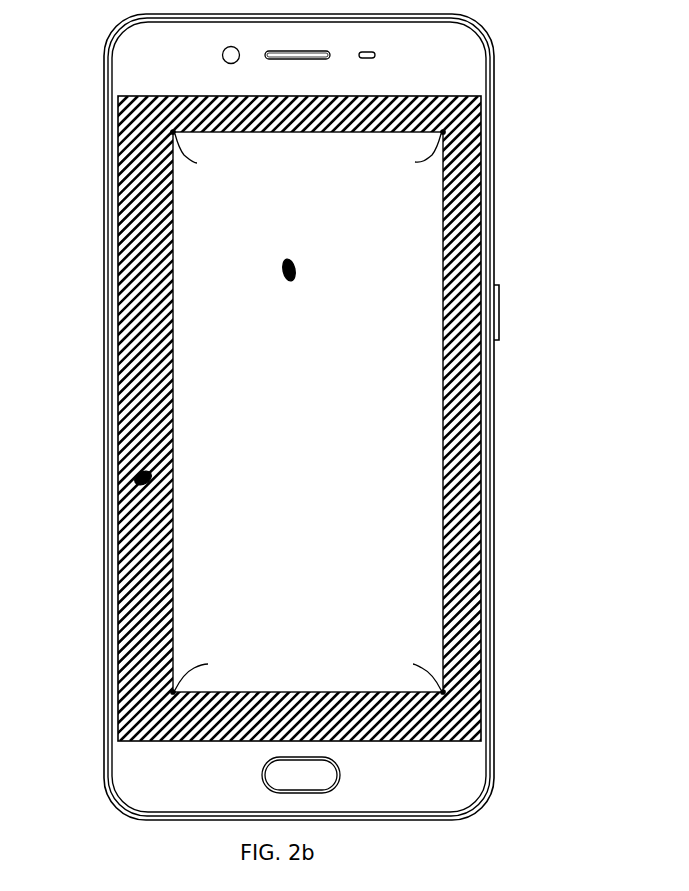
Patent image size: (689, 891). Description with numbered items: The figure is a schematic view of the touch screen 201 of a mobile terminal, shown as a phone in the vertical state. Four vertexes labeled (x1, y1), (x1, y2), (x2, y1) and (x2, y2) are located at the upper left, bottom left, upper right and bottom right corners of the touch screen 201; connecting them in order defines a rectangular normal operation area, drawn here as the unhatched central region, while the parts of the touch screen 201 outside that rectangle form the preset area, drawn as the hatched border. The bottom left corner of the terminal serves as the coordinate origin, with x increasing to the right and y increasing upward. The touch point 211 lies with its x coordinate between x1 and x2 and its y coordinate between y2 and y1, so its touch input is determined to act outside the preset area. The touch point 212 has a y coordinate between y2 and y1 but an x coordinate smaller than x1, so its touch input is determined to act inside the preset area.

The touch screen 201 is at (426, 262).
The touch point 211 is at (297, 263).
The touch point 212 is at (134, 481).